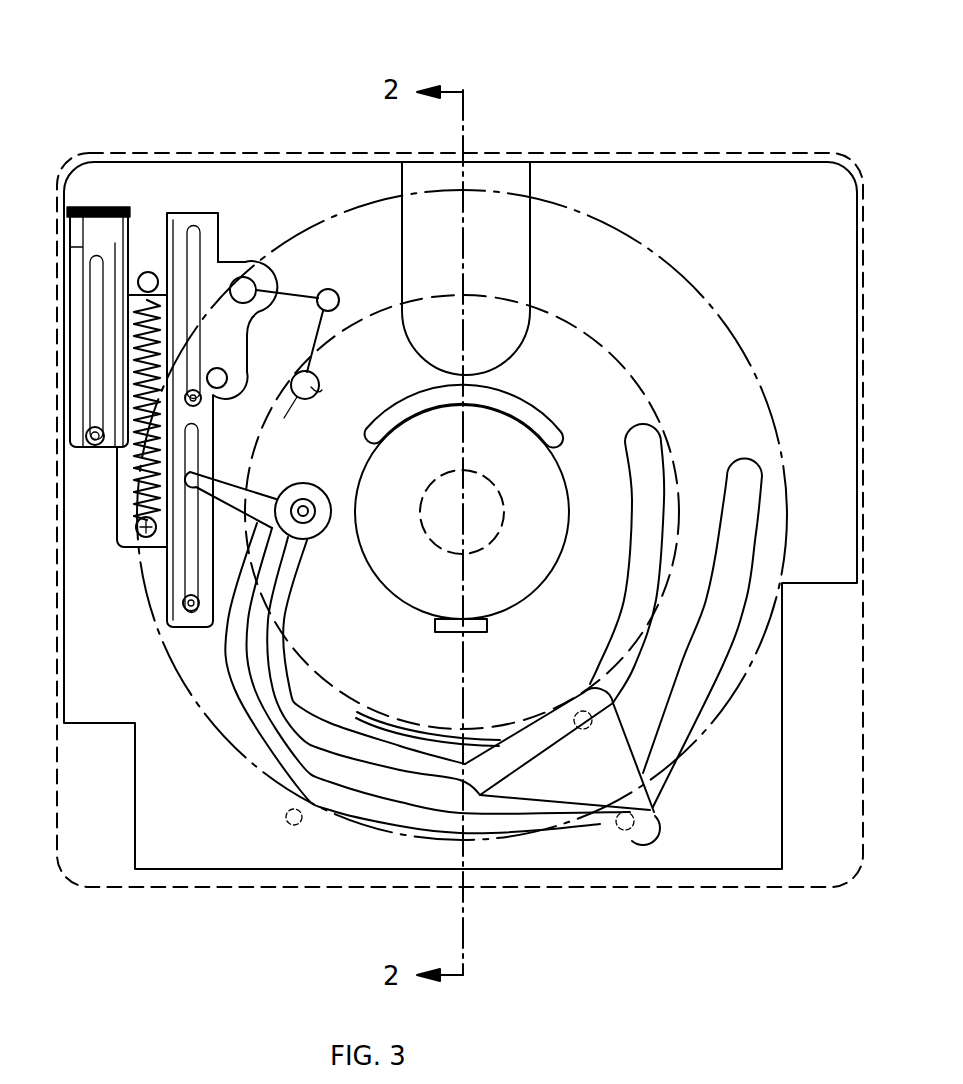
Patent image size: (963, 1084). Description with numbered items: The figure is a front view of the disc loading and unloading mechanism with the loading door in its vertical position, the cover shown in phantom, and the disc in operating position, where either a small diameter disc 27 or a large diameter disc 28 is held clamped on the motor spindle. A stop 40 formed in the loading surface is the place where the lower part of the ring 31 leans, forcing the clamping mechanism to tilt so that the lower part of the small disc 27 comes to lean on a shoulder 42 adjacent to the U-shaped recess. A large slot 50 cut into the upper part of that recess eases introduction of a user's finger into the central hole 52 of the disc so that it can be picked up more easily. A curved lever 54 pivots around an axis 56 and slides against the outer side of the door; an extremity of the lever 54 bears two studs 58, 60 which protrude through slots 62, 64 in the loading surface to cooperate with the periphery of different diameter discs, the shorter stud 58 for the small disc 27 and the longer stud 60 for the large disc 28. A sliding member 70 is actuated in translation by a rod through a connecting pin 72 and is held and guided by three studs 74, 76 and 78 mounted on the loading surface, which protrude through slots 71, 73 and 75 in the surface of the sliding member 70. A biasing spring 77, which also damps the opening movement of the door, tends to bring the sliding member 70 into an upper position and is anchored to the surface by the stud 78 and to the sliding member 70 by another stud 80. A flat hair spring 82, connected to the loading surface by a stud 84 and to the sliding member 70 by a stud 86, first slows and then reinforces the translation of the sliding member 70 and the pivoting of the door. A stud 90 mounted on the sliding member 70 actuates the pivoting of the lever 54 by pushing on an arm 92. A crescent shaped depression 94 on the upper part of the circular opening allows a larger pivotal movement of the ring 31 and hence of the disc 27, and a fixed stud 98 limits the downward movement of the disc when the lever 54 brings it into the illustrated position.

The small diameter disc 27 is at (312, 668).
The large diameter disc 28 is at (197, 690).
The ring 31 is at (508, 600).
The stop 40 is at (455, 628).
The shoulder 42 is at (432, 740).
The large slot 50 is at (521, 335).
The central hole 52 is at (495, 525).
The curved lever 54 is at (358, 788).
The axis 56 is at (310, 500).
The stud 58 is at (585, 730).
The stud 60 is at (622, 842).
The slot 62 is at (620, 647).
The slot 64 is at (700, 722).
The sliding member 70 is at (234, 327).
The slot 71 is at (92, 382).
The connecting pin 72 is at (119, 212).
The slot 73 is at (187, 560).
The stud 74 is at (83, 441).
The slot 75 is at (186, 352).
The stud 76 is at (170, 630).
The biasing spring 77 is at (140, 486).
The stud 78 is at (148, 272).
The stud 80 is at (136, 528).
The flat hair spring 82 is at (334, 294).
The stud 84 is at (320, 393).
The stud 86 is at (262, 285).
The stud 90 is at (228, 382).
The arm 92 is at (225, 496).
The crescent shaped depression 94 is at (552, 430).
The fixed stud 98 is at (285, 817).